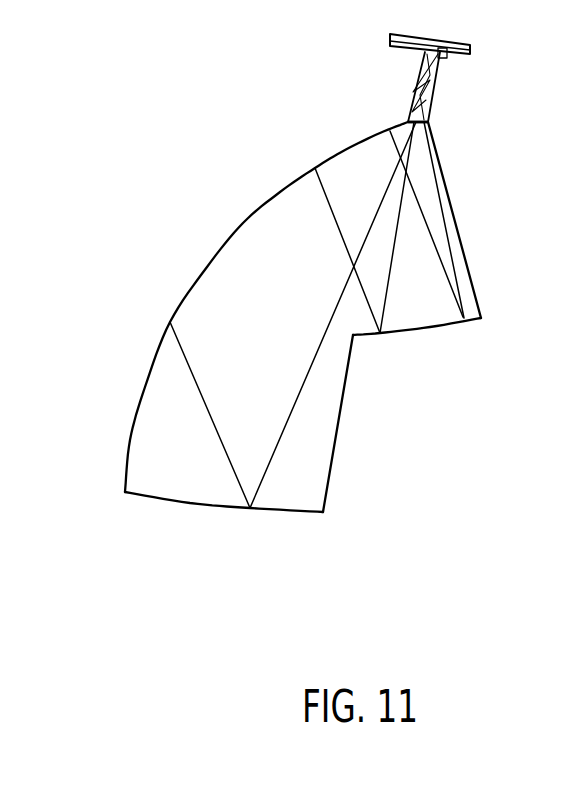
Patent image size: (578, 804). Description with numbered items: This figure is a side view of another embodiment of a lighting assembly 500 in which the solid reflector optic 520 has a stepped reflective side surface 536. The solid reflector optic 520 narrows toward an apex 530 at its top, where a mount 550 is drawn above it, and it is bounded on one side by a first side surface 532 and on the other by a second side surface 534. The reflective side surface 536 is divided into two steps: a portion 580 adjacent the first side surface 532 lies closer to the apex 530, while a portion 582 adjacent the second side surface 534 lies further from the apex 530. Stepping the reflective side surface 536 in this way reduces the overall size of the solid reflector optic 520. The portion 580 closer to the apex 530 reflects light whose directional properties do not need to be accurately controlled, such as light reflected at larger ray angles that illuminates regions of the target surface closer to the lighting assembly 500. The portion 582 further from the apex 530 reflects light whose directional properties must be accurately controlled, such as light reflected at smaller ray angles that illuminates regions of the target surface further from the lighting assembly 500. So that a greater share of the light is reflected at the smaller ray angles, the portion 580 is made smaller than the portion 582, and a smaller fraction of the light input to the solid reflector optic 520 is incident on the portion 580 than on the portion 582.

The lighting assembly 500 is at (298, 335).
The solid reflector optic 520 is at (269, 320).
The apex 530 is at (431, 121).
The first side surface 532 is at (457, 220).
The second side surface 534 is at (145, 387).
The reflective side surface 536 is at (341, 551).
The light source mount 550 is at (430, 107).
The portion of reflective side surface 580 is at (422, 332).
The portion of reflective side surface 582 is at (195, 507).